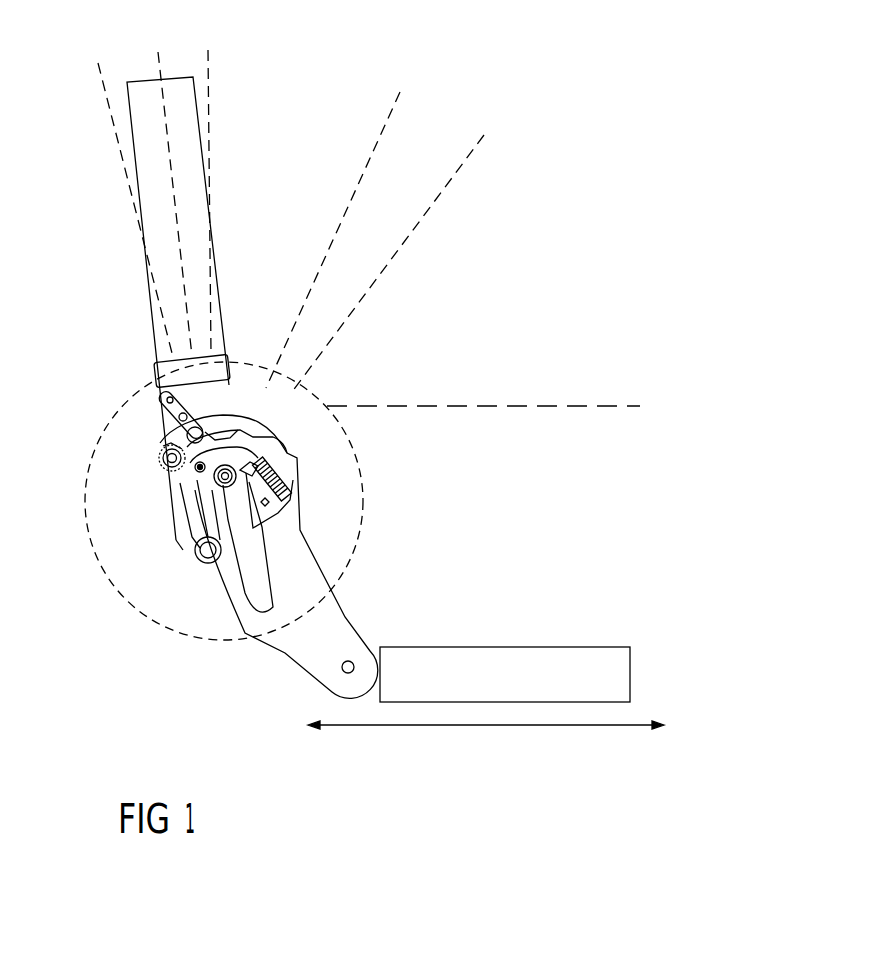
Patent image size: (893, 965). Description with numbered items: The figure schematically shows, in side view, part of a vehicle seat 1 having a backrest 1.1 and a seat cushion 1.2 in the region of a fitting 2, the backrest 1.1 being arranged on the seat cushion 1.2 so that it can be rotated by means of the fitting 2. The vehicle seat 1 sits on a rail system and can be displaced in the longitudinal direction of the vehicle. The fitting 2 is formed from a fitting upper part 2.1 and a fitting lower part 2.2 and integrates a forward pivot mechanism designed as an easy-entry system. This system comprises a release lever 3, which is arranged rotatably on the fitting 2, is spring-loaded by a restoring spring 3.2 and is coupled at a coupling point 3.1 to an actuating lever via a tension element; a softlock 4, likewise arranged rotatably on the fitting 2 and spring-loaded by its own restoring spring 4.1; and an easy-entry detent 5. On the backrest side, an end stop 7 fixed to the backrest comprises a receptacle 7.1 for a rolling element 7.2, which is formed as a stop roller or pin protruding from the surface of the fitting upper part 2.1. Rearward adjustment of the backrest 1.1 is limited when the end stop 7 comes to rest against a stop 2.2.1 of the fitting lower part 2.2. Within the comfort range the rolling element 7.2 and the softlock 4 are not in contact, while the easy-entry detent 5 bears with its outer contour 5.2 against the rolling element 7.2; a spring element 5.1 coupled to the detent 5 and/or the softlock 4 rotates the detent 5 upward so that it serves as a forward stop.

The vehicle seat 1 is at (510, 168).
The backrest 1.1 is at (160, 210).
The seat cushion 1.2 is at (612, 677).
The fitting 2 is at (363, 546).
The fitting upper part 2.1 is at (240, 420).
The fitting lower part 2.2 is at (325, 620).
The stop 2.2.1 is at (168, 448).
The release lever 3 is at (253, 597).
The coupling point 3.1 is at (190, 471).
The restoring spring 3.2 is at (282, 489).
The softlock 4 is at (188, 508).
The restoring spring 4.1 is at (197, 560).
The easy-entry detent 5 is at (280, 456).
The spring element 5.1 is at (160, 460).
The outer contour 5.2 is at (205, 432).
The end stop 7 is at (157, 393).
The receptacle 7.1 is at (205, 430).
The rolling element 7.2 is at (168, 442).